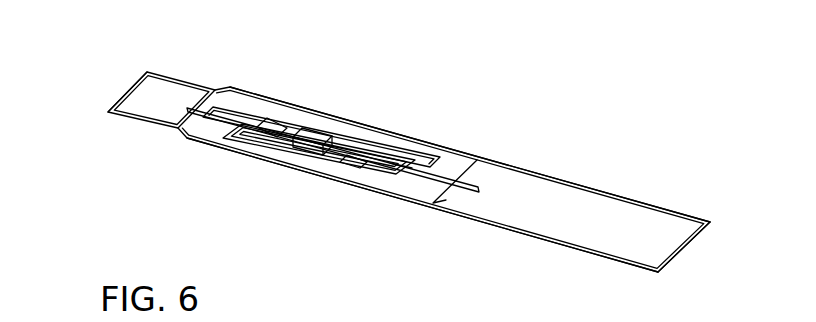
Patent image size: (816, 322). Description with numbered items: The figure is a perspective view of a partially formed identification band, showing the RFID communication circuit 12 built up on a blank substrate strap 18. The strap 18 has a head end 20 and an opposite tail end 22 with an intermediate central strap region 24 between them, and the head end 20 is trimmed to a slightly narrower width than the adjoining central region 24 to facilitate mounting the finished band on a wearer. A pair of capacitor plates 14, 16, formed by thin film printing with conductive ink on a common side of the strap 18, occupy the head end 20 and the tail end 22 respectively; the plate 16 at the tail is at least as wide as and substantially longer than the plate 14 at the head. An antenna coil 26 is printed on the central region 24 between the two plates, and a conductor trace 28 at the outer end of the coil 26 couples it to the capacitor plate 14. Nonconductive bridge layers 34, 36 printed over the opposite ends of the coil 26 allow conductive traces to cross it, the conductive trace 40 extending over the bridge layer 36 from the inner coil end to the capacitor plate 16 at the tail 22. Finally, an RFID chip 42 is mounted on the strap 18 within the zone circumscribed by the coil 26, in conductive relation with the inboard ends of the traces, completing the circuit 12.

The RFID communication circuit 12 is at (362, 127).
The capacitor plate 14 is at (143, 86).
The capacitor plate 16 is at (566, 186).
The substrate strap 18 is at (518, 160).
The head end 20 is at (93, 115).
The tail end 22 is at (708, 259).
The central strap region 24 is at (422, 205).
The antenna coil 26 is at (294, 168).
The conductor trace 28 is at (321, 89).
The nonconductive bridge layer 34 is at (317, 111).
The nonconductive bridge layer 36 is at (417, 141).
The conductive trace 40 is at (430, 129).
The RFID chip 42 is at (336, 98).